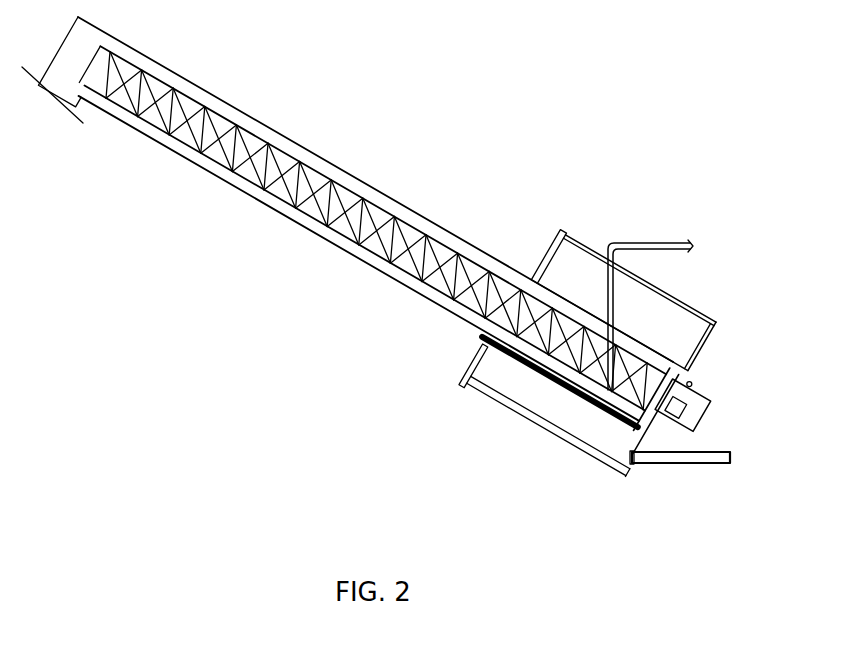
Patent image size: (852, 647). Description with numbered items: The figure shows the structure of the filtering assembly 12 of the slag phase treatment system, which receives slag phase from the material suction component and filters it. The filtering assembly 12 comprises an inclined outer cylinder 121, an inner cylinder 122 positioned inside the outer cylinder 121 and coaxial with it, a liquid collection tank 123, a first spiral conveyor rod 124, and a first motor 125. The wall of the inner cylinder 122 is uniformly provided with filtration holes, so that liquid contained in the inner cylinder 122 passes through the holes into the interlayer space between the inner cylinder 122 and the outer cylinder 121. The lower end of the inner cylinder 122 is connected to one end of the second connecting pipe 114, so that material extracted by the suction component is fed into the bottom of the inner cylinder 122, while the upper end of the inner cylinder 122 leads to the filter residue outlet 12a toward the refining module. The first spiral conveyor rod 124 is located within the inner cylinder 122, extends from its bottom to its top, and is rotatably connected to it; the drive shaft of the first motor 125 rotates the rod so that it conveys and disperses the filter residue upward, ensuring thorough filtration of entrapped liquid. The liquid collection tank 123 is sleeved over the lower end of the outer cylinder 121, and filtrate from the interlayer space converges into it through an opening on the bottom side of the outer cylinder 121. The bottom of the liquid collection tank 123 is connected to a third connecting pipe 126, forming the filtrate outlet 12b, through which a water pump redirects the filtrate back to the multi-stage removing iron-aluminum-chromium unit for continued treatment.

The filtering assembly 12 is at (406, 330).
The filter residue outlet 12a is at (84, 68).
The filtrate outlet 12b is at (733, 457).
The second connecting pipe 114 is at (652, 245).
The outer cylinder 121 is at (290, 139).
The inner cylinder 122 is at (232, 184).
The liquid collection tank 123 is at (692, 315).
The first spiral conveyor rod 124 is at (410, 212).
The first motor 125 is at (714, 407).
The third connecting pipe 126 is at (668, 463).